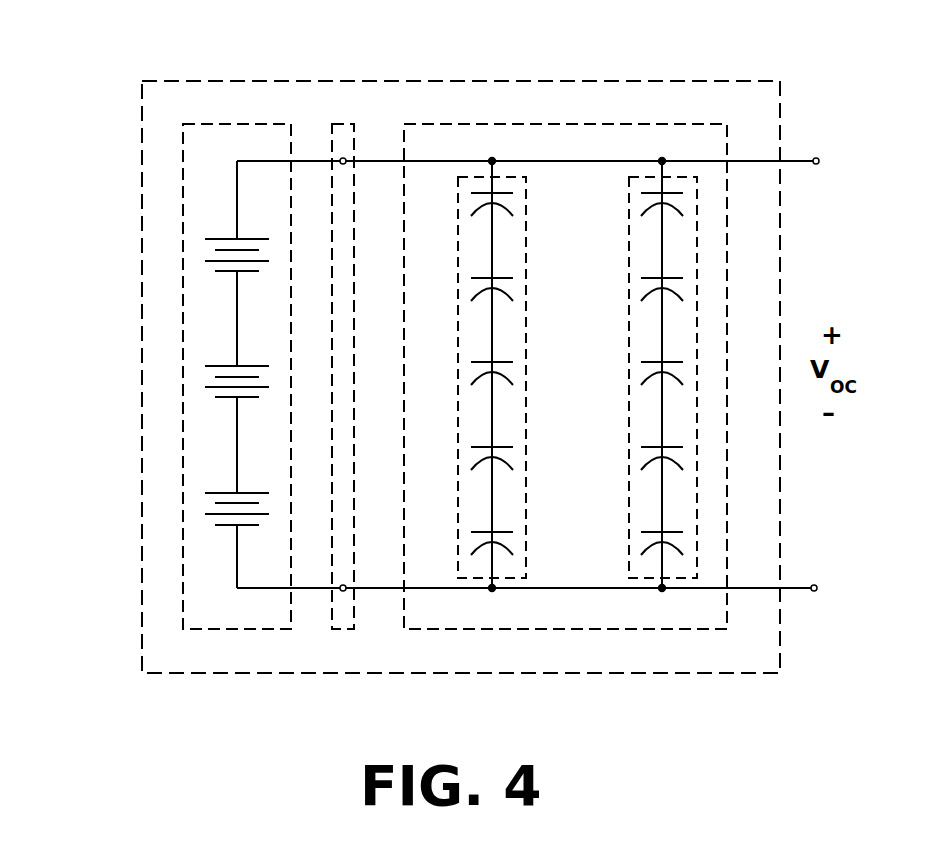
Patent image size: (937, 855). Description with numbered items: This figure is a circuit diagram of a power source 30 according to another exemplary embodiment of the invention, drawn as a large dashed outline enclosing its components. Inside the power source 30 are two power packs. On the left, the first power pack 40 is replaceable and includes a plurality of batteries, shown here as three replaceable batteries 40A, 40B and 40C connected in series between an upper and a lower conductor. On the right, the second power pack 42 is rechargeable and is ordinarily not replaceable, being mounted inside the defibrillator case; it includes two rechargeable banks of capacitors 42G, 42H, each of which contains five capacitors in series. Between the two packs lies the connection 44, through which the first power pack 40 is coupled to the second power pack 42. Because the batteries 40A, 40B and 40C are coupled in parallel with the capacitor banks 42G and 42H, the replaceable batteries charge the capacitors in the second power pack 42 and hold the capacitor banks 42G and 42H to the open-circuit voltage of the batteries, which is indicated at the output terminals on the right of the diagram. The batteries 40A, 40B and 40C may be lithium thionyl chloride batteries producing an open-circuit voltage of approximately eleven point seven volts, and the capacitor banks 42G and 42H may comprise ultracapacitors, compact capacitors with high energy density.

The power source 30 is at (153, 80).
The first power pack 40 is at (225, 124).
The replaceable battery 40A is at (172, 251).
The replaceable battery 40B is at (172, 378).
The replaceable battery 40C is at (172, 503).
The connection 44 is at (343, 124).
The second power pack 42 is at (512, 124).
The bank of capacitors 42G is at (530, 335).
The bank of capacitors 42H is at (626, 418).